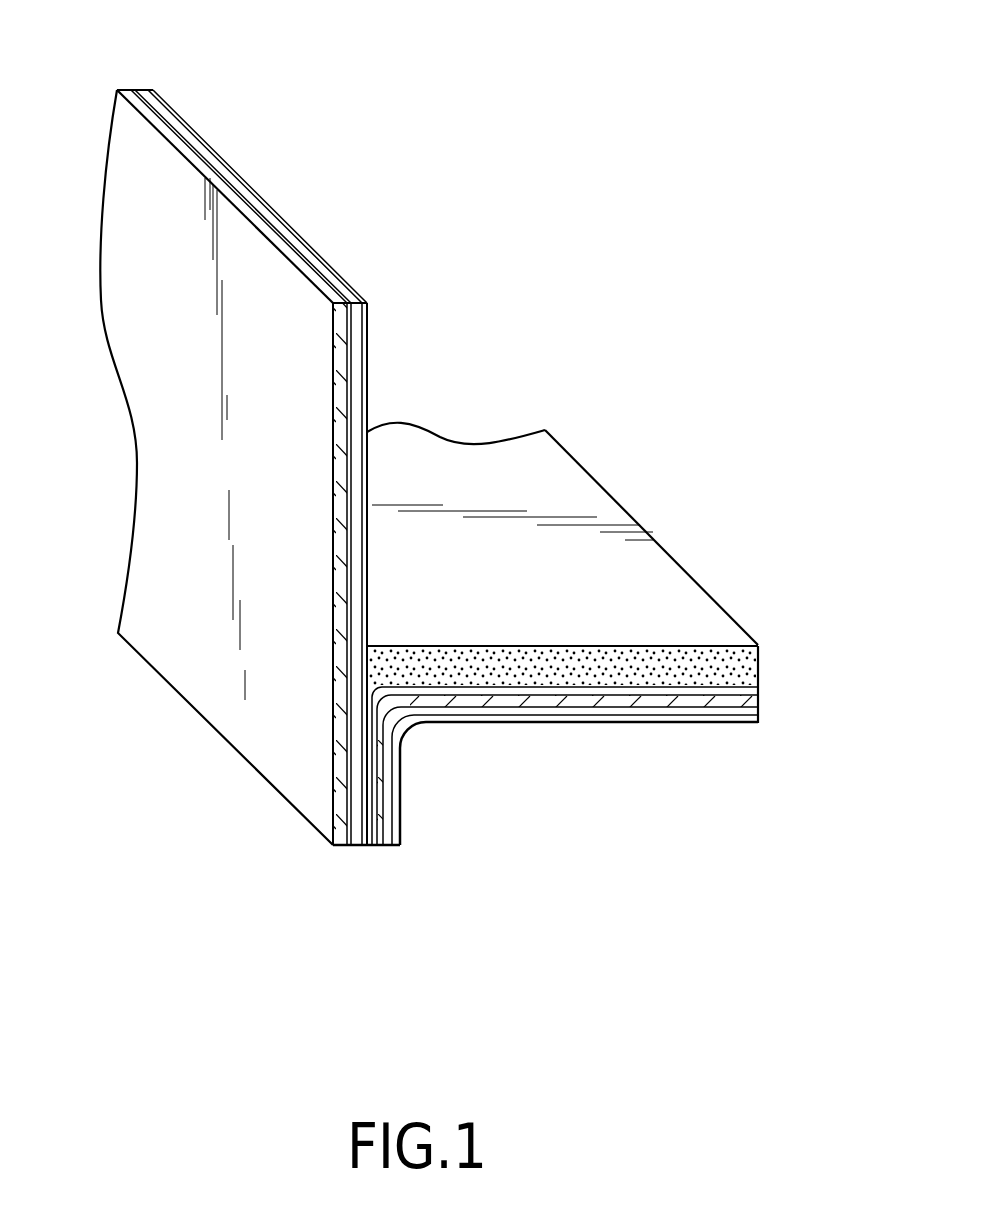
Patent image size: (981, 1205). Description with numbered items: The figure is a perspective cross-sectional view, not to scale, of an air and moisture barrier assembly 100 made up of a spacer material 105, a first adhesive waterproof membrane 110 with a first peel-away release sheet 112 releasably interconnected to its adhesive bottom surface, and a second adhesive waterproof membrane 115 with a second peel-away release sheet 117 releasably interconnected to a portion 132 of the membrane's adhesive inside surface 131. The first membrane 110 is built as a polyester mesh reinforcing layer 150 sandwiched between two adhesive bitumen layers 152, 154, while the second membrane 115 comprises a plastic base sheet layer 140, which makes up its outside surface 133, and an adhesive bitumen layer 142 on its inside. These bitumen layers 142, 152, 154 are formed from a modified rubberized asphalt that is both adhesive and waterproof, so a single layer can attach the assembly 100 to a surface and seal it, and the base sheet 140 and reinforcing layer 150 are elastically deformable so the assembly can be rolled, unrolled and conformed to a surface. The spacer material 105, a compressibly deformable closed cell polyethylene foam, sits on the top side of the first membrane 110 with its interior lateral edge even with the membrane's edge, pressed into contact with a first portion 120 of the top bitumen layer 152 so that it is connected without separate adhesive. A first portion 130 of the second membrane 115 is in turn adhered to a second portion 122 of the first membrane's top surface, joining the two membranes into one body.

The air and moisture barrier assembly 100 is at (662, 397).
The spacer material 105 is at (760, 640).
The first adhesive waterproof membrane 110 is at (766, 688).
The first peel-away release sheet 112 is at (653, 723).
The second adhesive waterproof membrane 115 is at (168, 84).
The second peel-away release sheet 117 is at (368, 308).
The first portion of the first membrane's top surface 120 is at (745, 636).
The second portion of the first membrane's top surface 122 is at (400, 731).
The first portion of the second membrane 130 is at (325, 847).
The inside surface of the second membrane 131 is at (364, 563).
The portion of the second membrane's inside surface 132 is at (325, 306).
The outside surface of the second membrane 133 is at (148, 362).
The base sheet layer 140 is at (340, 835).
The bitumen-containing layer 142 is at (357, 833).
The reinforcing layer 150 is at (595, 702).
The adhesive bitumen layer 152 is at (708, 692).
The adhesive bitumen layer 154 is at (533, 712).